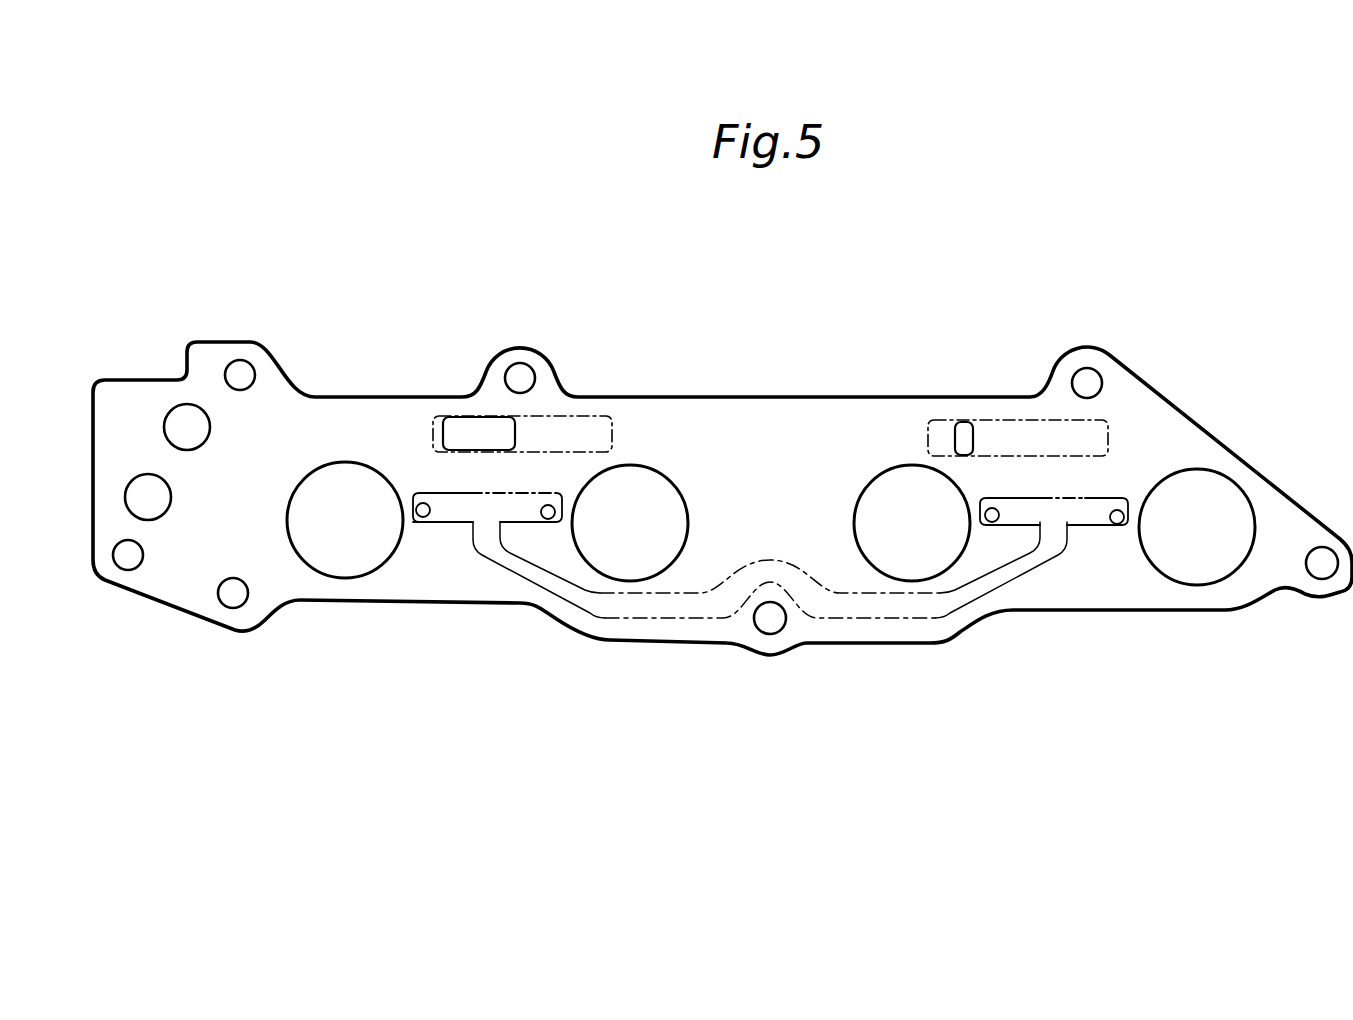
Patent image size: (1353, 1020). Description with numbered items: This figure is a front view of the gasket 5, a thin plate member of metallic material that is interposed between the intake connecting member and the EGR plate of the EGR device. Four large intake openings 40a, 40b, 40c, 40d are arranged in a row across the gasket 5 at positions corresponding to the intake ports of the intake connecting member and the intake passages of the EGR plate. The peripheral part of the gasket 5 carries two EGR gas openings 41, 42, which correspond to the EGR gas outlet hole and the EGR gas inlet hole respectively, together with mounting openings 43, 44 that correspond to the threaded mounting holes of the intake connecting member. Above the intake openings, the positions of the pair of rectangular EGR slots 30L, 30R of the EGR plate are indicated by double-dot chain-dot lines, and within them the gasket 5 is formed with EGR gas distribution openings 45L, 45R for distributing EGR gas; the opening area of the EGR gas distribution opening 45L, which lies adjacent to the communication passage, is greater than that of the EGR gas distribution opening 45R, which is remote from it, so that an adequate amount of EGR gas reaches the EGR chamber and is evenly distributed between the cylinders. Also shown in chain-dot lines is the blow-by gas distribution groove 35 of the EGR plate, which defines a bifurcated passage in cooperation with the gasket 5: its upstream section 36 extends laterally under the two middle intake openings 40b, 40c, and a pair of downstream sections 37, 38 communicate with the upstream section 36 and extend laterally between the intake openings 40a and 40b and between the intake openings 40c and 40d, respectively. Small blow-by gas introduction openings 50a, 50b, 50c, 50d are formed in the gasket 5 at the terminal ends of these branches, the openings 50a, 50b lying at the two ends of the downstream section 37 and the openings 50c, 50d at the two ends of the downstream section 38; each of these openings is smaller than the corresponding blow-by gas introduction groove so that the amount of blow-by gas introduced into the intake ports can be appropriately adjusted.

The gasket 5 is at (1192, 356).
The EGR slot 30L is at (598, 413).
The EGR slot 30R is at (1010, 418).
The blow-by gas distribution groove 35 is at (845, 617).
The upstream section 36 is at (725, 618).
The downstream section 37 is at (1098, 498).
The downstream section 38 is at (443, 492).
The intake opening 40a is at (360, 576).
The intake opening 40b is at (618, 577).
The intake opening 40c is at (924, 578).
The intake opening 40d is at (1210, 580).
The EGR gas opening 41 is at (134, 497).
The EGR gas opening 42 is at (192, 408).
The mounting opening 43 is at (528, 371).
The mounting opening 44 is at (244, 368).
The EGR gas distribution opening 45L is at (467, 416).
The EGR gas distribution opening 45R is at (968, 421).
The blow-by gas introduction opening 50a is at (423, 518).
The blow-by gas introduction opening 50b is at (548, 520).
The blow-by gas introduction opening 50c is at (993, 523).
The blow-by gas introduction opening 50d is at (1117, 525).